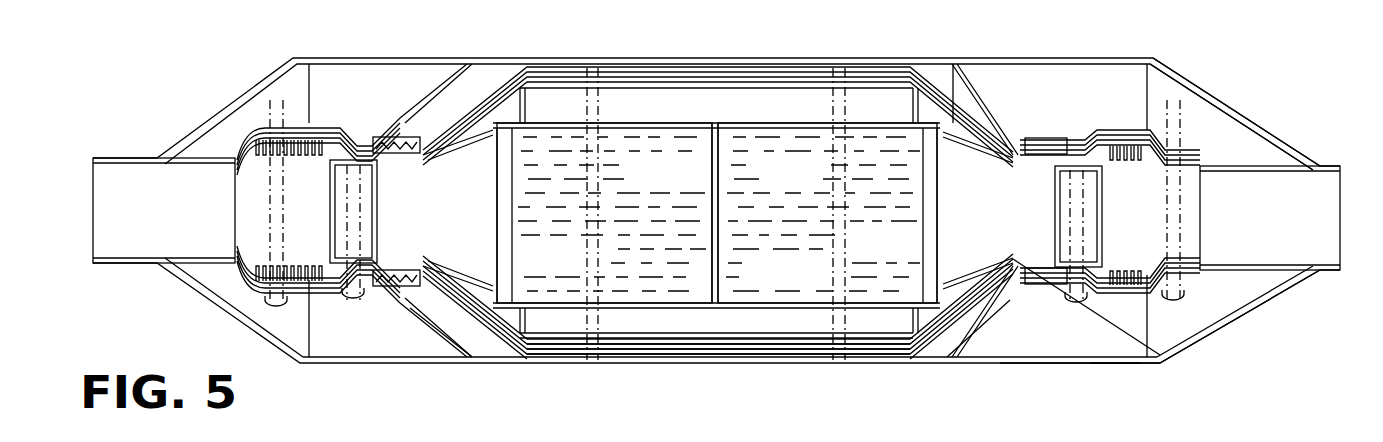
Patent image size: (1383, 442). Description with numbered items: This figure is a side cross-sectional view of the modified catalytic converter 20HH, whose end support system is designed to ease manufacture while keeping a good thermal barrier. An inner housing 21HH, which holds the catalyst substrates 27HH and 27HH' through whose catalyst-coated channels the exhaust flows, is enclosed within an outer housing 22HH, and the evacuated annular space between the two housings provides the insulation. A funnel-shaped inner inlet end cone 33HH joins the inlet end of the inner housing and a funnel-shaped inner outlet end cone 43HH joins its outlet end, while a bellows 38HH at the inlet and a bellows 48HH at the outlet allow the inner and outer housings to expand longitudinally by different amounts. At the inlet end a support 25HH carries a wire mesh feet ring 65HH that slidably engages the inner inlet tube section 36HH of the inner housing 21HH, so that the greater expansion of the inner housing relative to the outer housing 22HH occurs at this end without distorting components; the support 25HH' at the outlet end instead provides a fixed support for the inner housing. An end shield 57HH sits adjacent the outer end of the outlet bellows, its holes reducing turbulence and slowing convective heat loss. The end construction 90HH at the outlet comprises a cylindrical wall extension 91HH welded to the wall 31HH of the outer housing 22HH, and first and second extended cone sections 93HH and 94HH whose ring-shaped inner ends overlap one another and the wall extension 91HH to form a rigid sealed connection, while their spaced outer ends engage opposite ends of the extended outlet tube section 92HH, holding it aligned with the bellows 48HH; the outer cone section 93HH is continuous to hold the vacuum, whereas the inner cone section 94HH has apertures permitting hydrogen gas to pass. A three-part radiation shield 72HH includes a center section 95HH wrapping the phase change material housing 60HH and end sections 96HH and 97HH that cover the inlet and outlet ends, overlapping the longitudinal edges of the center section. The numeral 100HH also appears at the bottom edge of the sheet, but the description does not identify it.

The modified catalytic converter 20HH is at (1226, 377).
The inner housing 21HH is at (694, 330).
The outer housing 22HH is at (780, 397).
The support 25HH is at (716, 338).
The support 25HH' is at (1082, 380).
The catalyst substrate 27HH is at (604, 213).
The catalyst substrate 27HH' is at (827, 213).
The wall of outer housing 31HH is at (793, 367).
The inner inlet end cone 33HH is at (423, 275).
The inner inlet tube section 36HH is at (418, 265).
The bellows 38HH is at (262, 264).
The inner outlet end cone 43HH is at (940, 270).
The bellows 48HH is at (1117, 148).
The end shield 57HH is at (1077, 220).
The phase change material housing 60HH is at (772, 325).
The wire mesh feet ring 65HH is at (377, 267).
The radiation shield 72HH is at (621, 395).
The end construction 90HH is at (1190, 405).
The cylindrical wall extension 91HH is at (1003, 367).
The extended outlet tube section 92HH is at (1227, 273).
The first extended cone section 93HH is at (1250, 131).
The second extended cone section 94HH is at (1193, 102).
The center section 95HH is at (563, 343).
The end section 96HH is at (330, 282).
The end section 97HH is at (1137, 305).
The converter system 100HH is at (1135, 402).